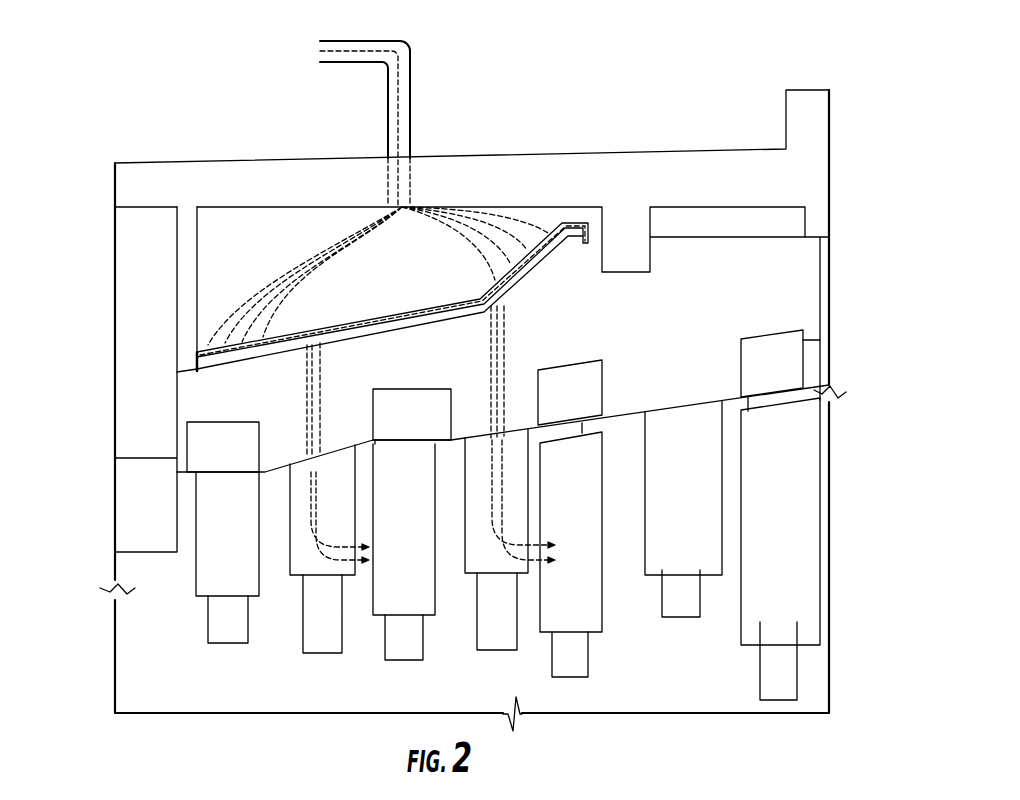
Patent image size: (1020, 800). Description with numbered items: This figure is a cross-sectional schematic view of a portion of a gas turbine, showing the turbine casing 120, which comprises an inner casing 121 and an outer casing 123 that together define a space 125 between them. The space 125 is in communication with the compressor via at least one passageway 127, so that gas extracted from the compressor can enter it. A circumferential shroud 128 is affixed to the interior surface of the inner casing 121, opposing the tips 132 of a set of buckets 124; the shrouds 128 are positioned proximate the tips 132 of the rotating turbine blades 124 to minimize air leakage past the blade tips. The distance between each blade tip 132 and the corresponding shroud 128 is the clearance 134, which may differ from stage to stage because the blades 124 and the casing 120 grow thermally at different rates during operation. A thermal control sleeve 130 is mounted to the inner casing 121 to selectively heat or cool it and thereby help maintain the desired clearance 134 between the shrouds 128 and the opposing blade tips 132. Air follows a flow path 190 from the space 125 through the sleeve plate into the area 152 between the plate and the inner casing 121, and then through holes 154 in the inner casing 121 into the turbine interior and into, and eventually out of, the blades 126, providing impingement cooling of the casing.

The turbine casing 120 is at (839, 177).
The inner casing 121 is at (233, 390).
The outer casing 123 is at (268, 198).
The buckets 124 is at (210, 552).
The space 125 is at (258, 281).
The blades 126 is at (138, 490).
The passageway 127 is at (412, 64).
The circumferential shroud 128 is at (262, 438).
The thermal control sleeve 130 is at (394, 313).
The tips 132 is at (203, 474).
The clearance 134 is at (197, 472).
The area 152 is at (383, 327).
The holes 154 is at (322, 378).
The flow path 190 is at (333, 257).